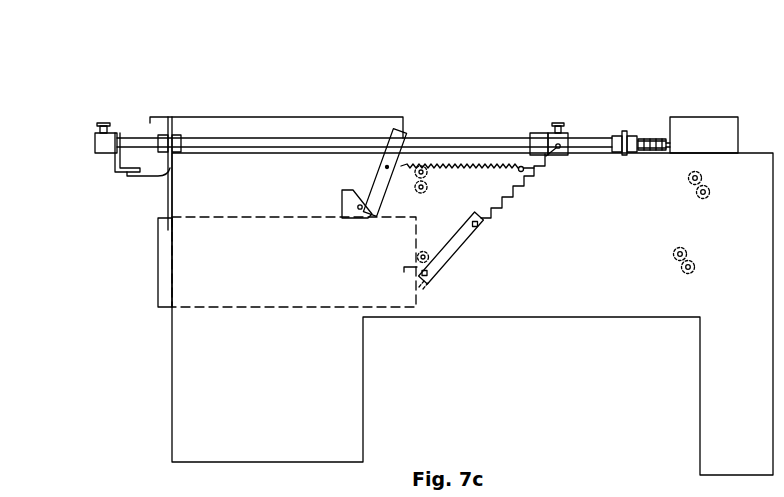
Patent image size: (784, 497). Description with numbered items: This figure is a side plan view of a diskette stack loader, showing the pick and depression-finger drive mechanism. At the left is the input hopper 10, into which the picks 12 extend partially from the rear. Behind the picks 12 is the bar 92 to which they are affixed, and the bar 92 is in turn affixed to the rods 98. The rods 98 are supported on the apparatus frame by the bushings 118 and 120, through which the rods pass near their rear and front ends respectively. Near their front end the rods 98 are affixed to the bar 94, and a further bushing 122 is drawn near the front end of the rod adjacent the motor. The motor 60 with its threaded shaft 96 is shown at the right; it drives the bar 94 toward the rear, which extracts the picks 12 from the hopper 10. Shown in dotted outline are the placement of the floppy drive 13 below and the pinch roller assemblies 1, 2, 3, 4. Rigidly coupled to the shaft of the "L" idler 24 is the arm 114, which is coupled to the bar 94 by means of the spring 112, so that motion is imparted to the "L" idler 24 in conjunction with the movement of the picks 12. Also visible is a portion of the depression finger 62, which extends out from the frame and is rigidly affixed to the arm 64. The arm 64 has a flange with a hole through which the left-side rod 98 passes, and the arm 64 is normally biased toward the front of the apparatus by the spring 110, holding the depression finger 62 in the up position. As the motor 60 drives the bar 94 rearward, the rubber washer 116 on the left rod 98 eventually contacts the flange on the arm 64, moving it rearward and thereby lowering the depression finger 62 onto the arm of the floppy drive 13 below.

The input hopper 10 is at (190, 117).
The picks 12 is at (120, 177).
The floppy drive 13 is at (158, 252).
The "L" idler 24 is at (430, 288).
The motor 60 is at (687, 117).
The depression finger 62 is at (354, 213).
The arm 64 is at (383, 157).
The bar 92 is at (97, 142).
The bar 94 is at (558, 122).
The threaded shaft 96 is at (655, 139).
The rods 98 is at (338, 140).
The spring 110 is at (483, 163).
The spring 112 is at (532, 178).
The arm 114 is at (468, 236).
The rubber washer 116 is at (537, 133).
The bushing 118 is at (176, 150).
The bushing 120 is at (620, 131).
The bushing 122 is at (623, 156).
The pinch roller assembly 1 is at (436, 180).
The pinch roller assembly 2 is at (687, 187).
The pinch roller assembly 3 is at (466, 253).
The pinch roller assembly 4 is at (672, 263).